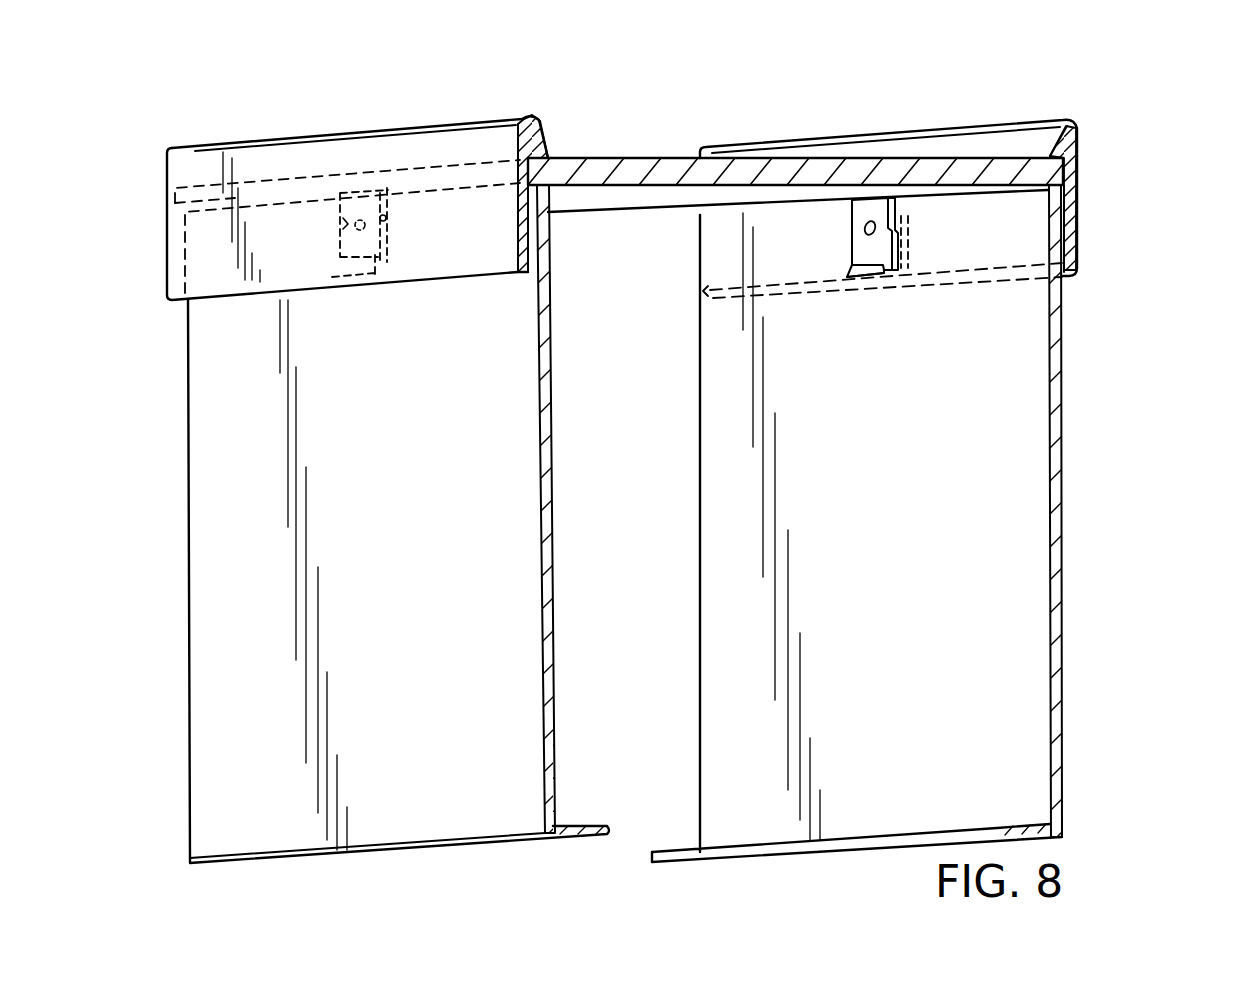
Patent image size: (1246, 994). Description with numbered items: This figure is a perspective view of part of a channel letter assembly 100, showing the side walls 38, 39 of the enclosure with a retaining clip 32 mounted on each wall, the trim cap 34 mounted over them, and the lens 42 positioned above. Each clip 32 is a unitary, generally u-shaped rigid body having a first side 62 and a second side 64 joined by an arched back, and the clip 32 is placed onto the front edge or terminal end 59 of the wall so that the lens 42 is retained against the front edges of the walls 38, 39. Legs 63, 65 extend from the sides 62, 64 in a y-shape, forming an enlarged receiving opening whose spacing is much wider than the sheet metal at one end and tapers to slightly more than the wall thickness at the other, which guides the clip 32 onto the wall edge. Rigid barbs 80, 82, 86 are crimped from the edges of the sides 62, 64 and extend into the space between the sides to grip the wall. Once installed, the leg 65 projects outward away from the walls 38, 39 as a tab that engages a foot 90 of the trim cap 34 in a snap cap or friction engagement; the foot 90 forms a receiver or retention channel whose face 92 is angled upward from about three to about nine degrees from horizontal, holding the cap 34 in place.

The channel letter assembly 100 is at (1094, 65).
The trim cap 34 is at (660, 202).
The lens 42 is at (651, 167).
The front edge 59 is at (1077, 165).
The retaining clip 32 is at (629, 272).
The barb 86 is at (388, 215).
The second side 64 is at (388, 243).
The leg 65 is at (360, 272).
The barb 82 is at (848, 236).
The barb 80 is at (898, 238).
The first side 62 is at (903, 210).
The leg 63 is at (872, 272).
The face 92 is at (545, 262).
The foot 90 is at (530, 273).
The wall 38 is at (520, 433).
The wall 39 is at (1033, 415).